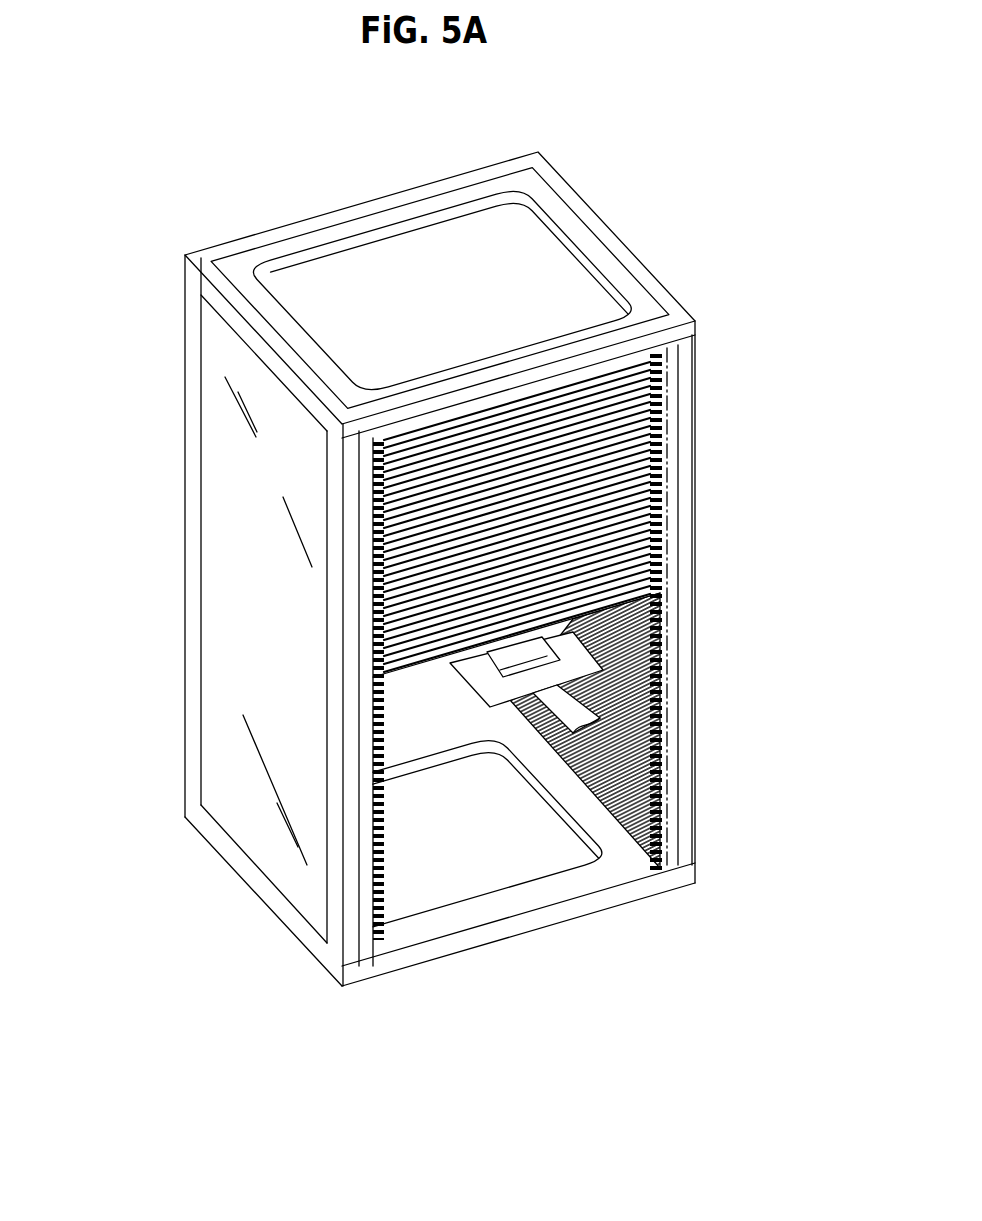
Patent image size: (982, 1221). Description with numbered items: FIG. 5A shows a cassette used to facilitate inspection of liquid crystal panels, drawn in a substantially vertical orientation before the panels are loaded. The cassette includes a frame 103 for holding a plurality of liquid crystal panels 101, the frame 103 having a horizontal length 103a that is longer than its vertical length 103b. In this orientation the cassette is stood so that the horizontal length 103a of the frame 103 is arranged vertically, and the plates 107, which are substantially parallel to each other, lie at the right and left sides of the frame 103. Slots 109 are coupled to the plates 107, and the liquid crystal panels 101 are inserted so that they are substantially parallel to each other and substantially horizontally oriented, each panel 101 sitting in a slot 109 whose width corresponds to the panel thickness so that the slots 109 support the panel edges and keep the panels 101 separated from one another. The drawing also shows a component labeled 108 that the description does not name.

The frame 103 is at (222, 241).
The horizontal length 103a is at (347, 913).
The vertical length 103b is at (503, 930).
The plates 107 is at (218, 566).
The liquid crystal panels 101 is at (570, 533).
The connecting member 108 is at (580, 663).
The slots 109 is at (367, 957).